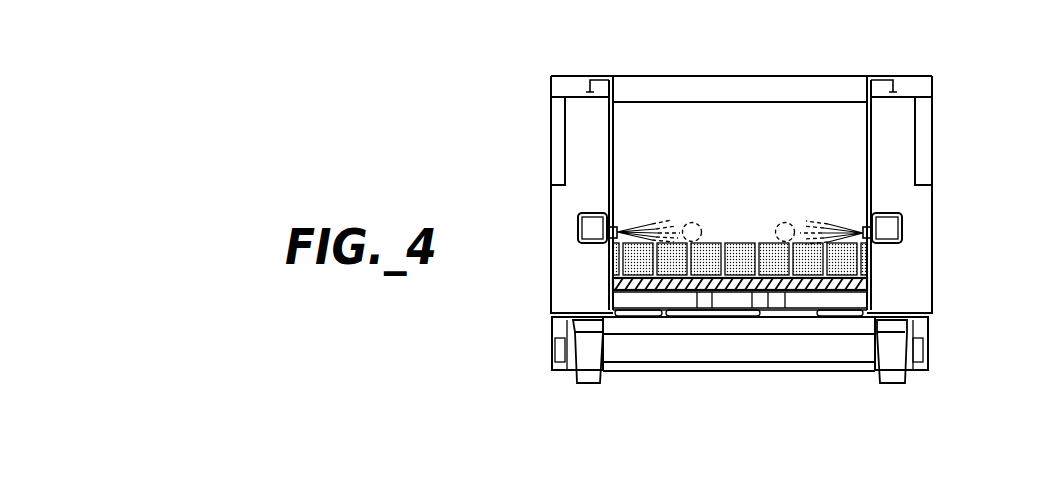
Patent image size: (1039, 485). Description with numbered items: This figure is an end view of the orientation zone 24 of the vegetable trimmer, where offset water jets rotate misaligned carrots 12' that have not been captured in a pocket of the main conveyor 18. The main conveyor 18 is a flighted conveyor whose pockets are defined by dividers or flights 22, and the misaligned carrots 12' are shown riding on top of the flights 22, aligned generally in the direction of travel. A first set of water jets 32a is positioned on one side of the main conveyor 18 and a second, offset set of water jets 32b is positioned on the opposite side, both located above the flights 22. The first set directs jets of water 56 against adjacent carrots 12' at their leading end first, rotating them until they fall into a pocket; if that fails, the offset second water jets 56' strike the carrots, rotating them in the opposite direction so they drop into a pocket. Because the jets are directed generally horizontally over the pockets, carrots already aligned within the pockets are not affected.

The orientation zone 24 is at (904, 56).
The misaligned carrots 12' is at (716, 194).
The water jets 56 is at (831, 214).
The second water jets 56' is at (648, 211).
The first set of water jets 32a is at (903, 235).
The second set of water jets 32b is at (577, 232).
The main conveyor 18 is at (730, 297).
The flights 22 is at (740, 297).